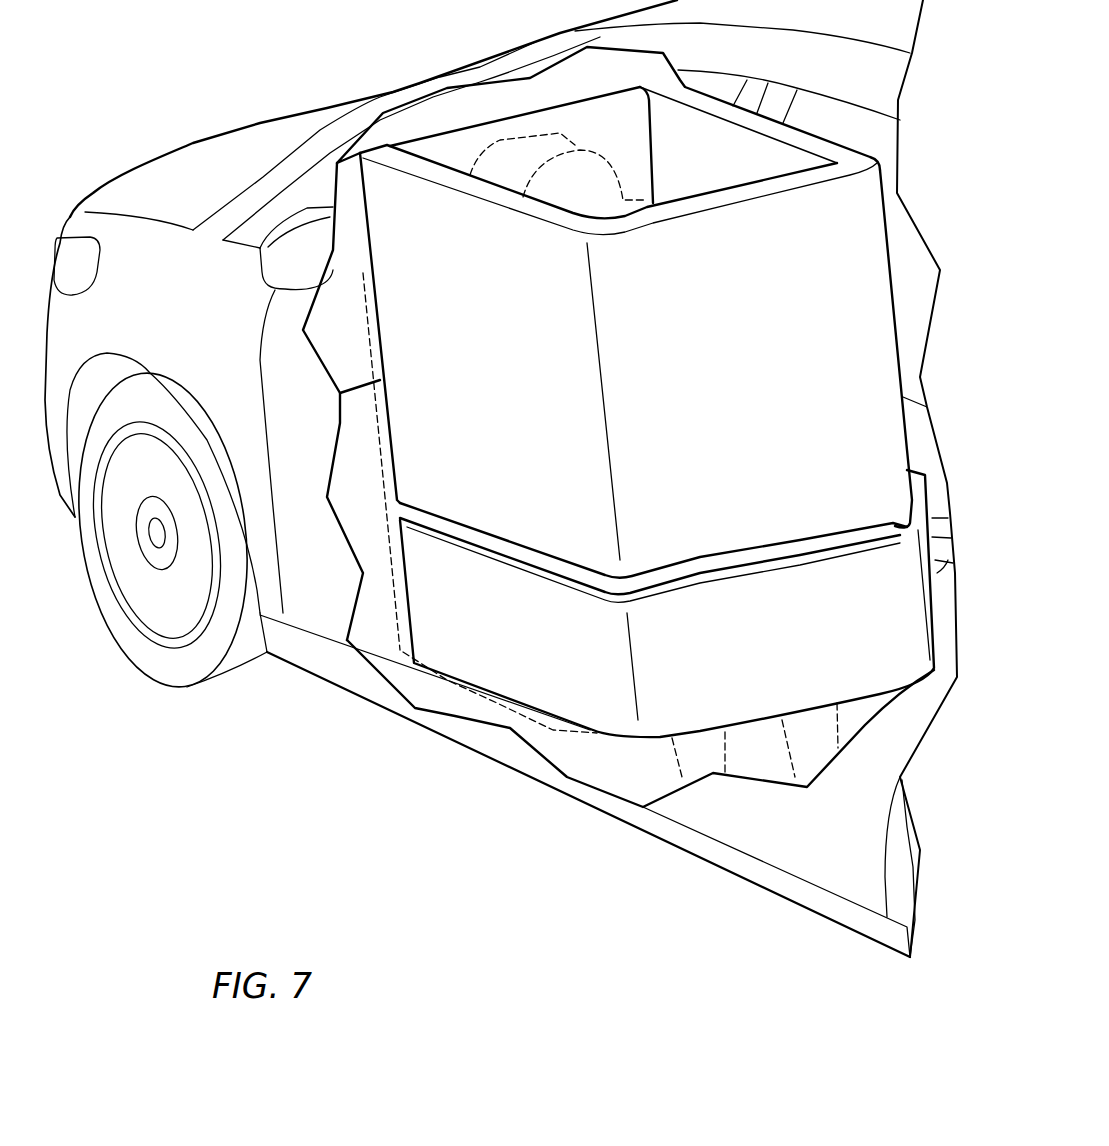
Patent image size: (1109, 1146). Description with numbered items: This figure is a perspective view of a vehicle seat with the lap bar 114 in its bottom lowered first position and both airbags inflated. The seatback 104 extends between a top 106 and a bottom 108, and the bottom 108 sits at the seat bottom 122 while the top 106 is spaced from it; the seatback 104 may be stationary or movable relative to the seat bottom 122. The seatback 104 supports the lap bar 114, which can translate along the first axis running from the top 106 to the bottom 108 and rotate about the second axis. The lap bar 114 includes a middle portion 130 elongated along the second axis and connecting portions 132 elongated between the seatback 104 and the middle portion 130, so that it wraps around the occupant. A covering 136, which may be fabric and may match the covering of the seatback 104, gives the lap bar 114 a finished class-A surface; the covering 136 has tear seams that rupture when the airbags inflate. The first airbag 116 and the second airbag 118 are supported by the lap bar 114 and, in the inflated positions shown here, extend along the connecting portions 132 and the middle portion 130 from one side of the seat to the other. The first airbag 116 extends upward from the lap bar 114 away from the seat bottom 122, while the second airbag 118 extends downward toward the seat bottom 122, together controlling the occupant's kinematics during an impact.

The seatback 104 is at (380, 423).
The top 106 is at (363, 272).
The bottom 108 is at (403, 652).
The lap bar 114 is at (513, 557).
The first airbag 116 is at (827, 333).
The second airbag 118 is at (857, 633).
The seat bottom 122 is at (553, 730).
The middle portion 130 is at (713, 578).
The connecting portions 132 is at (570, 578).
The covering 136 is at (473, 537).